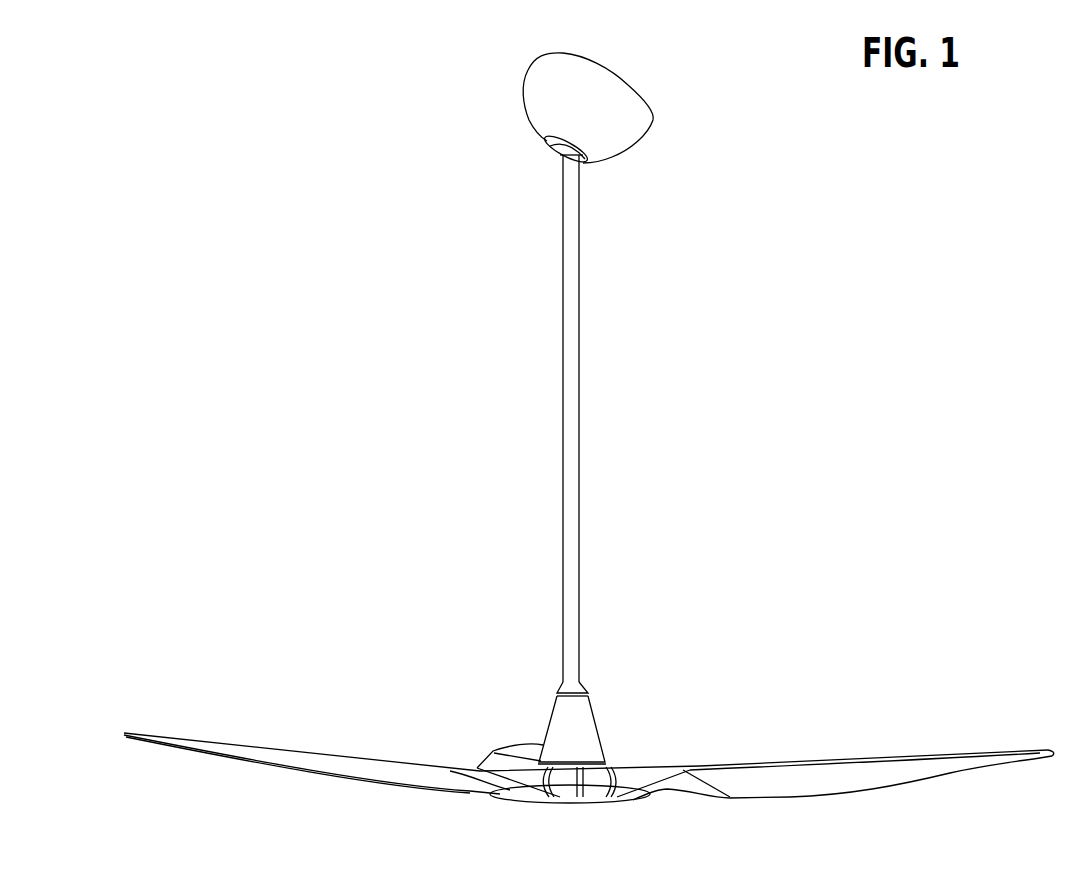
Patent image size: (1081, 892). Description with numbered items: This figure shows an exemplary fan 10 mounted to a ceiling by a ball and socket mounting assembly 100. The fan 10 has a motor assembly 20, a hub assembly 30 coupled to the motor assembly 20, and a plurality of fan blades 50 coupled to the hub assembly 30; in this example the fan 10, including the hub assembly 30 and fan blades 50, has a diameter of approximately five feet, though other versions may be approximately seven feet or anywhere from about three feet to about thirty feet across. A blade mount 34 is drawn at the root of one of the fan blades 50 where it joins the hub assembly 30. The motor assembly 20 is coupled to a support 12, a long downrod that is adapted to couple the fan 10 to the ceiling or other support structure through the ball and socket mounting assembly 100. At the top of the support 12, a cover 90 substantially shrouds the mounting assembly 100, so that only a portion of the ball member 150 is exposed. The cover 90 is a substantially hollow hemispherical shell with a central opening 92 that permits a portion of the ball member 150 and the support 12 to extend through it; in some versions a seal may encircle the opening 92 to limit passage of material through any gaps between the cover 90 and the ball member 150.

The fan 10 is at (807, 418).
The support 12 is at (579, 370).
The motor assembly 20 is at (618, 753).
The hub assembly 30 is at (667, 758).
The blade mount arm 34 is at (685, 768).
The fan blades 50 is at (229, 745).
The cover 90 is at (640, 143).
The central opening 92 is at (593, 168).
The ball and socket mounting assembly 100 is at (545, 165).
The ball member 150 is at (563, 155).